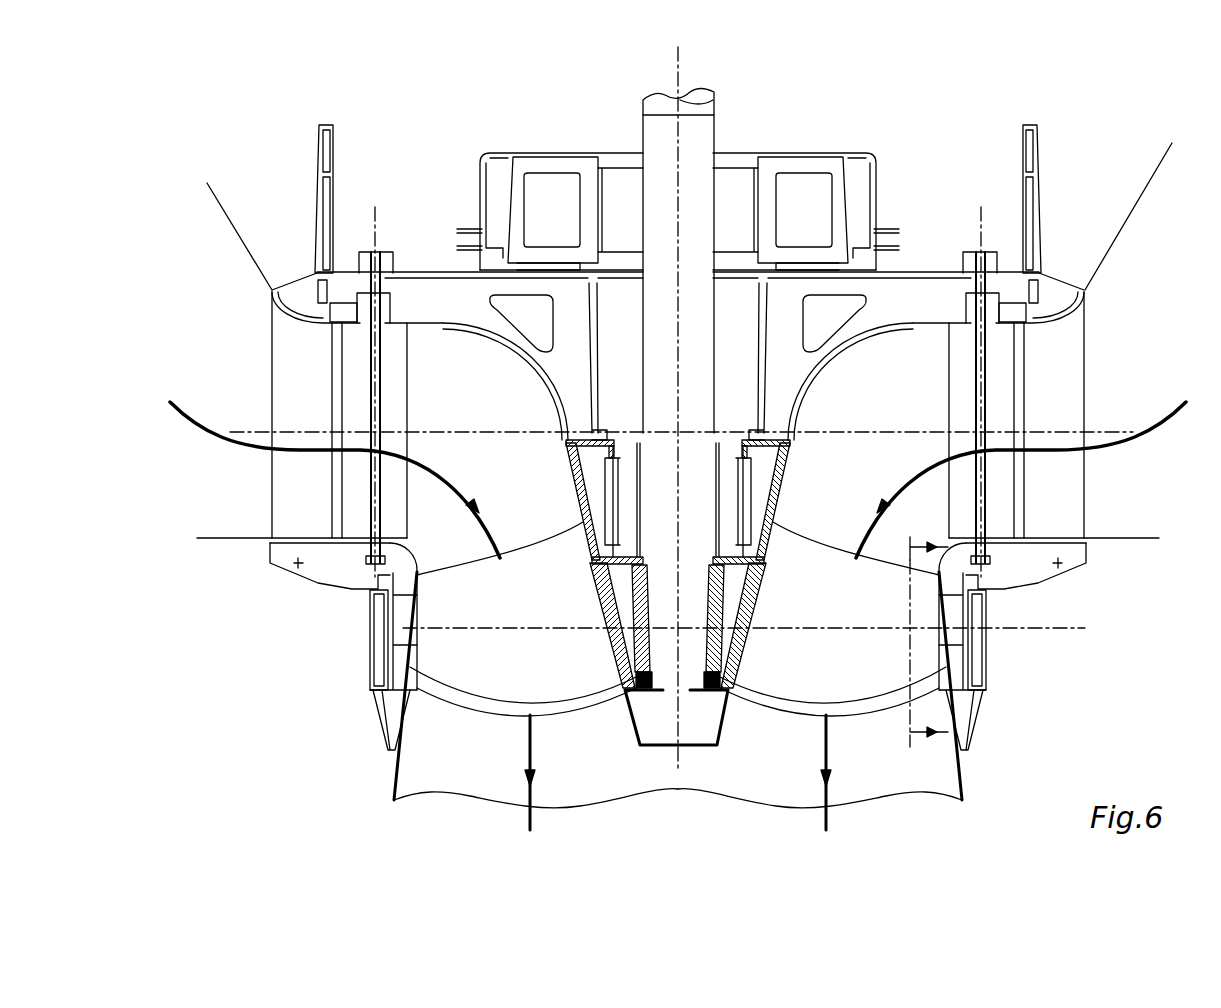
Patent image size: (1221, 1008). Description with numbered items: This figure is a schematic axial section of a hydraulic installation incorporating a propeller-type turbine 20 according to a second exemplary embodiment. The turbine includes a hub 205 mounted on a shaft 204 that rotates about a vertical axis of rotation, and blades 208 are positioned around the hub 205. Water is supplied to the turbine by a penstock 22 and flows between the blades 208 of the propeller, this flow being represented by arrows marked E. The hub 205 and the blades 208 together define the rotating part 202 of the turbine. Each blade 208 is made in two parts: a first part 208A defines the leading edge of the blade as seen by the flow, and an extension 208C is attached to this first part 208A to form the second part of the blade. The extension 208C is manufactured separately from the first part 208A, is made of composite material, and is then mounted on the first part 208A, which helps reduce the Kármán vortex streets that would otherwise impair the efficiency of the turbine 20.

The turbine 20 is at (900, 143).
The penstock 22 is at (668, 216).
The rotating part 202 is at (632, 748).
The shaft 204 is at (663, 143).
The hub 205 is at (702, 722).
The blades 208 is at (238, 645).
The first part 208A is at (450, 662).
The extension 208C is at (467, 697).